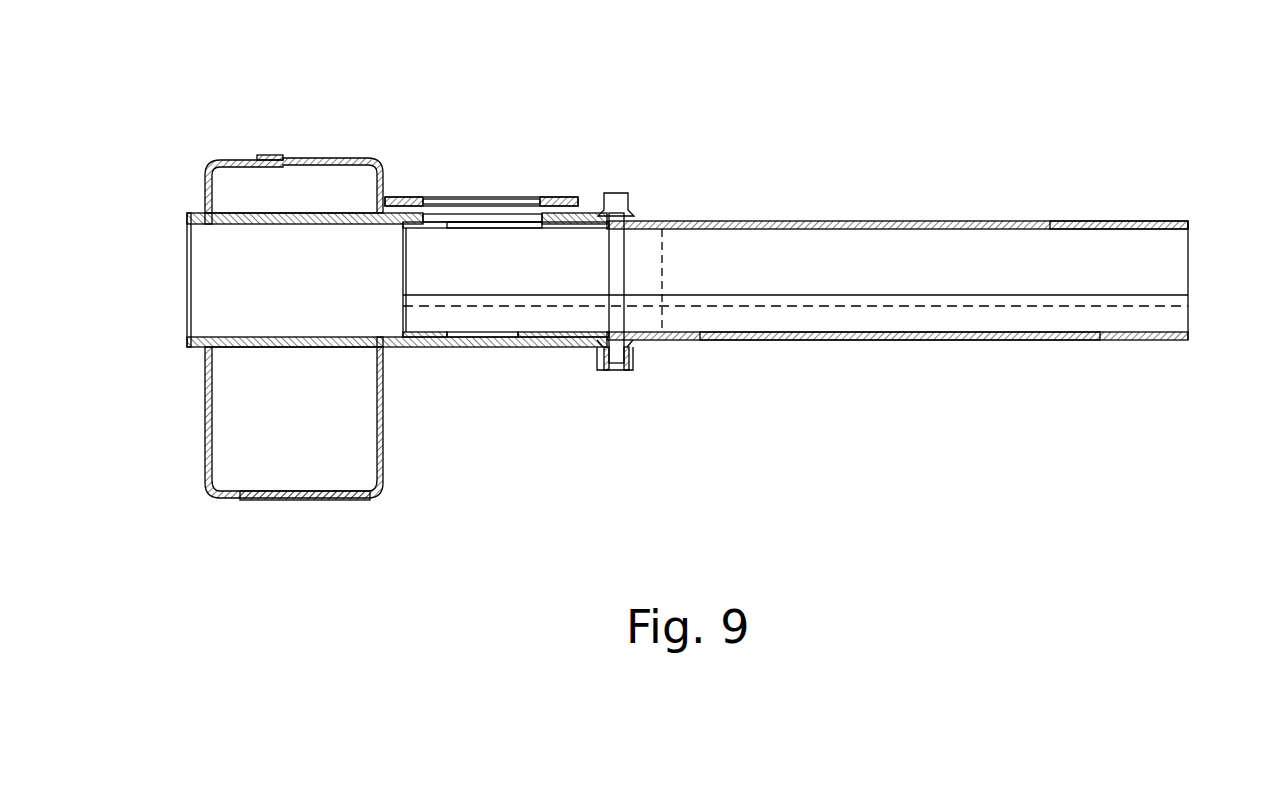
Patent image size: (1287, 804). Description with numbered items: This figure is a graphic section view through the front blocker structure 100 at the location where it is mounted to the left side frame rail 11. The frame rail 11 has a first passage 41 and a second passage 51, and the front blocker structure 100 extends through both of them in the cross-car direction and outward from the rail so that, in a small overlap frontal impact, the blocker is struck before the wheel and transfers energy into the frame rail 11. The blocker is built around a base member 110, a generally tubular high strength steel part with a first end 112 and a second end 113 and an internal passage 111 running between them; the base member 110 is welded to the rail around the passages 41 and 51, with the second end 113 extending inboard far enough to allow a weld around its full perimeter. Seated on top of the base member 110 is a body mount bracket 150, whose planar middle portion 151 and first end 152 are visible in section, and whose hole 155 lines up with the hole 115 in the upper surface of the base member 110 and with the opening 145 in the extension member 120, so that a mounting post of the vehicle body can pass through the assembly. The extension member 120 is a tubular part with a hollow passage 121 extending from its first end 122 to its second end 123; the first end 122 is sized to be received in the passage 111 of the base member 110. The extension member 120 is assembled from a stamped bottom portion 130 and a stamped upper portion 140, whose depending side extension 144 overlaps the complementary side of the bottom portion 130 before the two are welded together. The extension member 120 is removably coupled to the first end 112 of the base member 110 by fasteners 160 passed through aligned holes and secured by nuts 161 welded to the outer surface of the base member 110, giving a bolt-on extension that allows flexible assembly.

The left side frame rail 11 is at (328, 157).
The first passage 41 is at (383, 335).
The second passage 51 is at (208, 224).
The front blocker structure 100 is at (520, 406).
The base member 110 is at (240, 347).
The passage 111 is at (237, 224).
The first end 112 is at (662, 224).
The second end 113 is at (187, 218).
The hole 115 is at (450, 213).
The extension member 120 is at (1124, 218).
The hollow passage 121 is at (1160, 258).
The first end 122 is at (403, 240).
The second end 123 is at (1190, 221).
The bottom portion 130 is at (960, 340).
The upper portion 140 is at (958, 221).
The depending side extension 144 is at (833, 245).
The opening 145 is at (522, 229).
The body mount bracket 150 is at (552, 194).
The planar middle portion 151 is at (405, 197).
The first end 152 is at (578, 197).
The hole 155 is at (487, 197).
The fasteners 160 is at (625, 196).
The nuts 161 is at (633, 365).